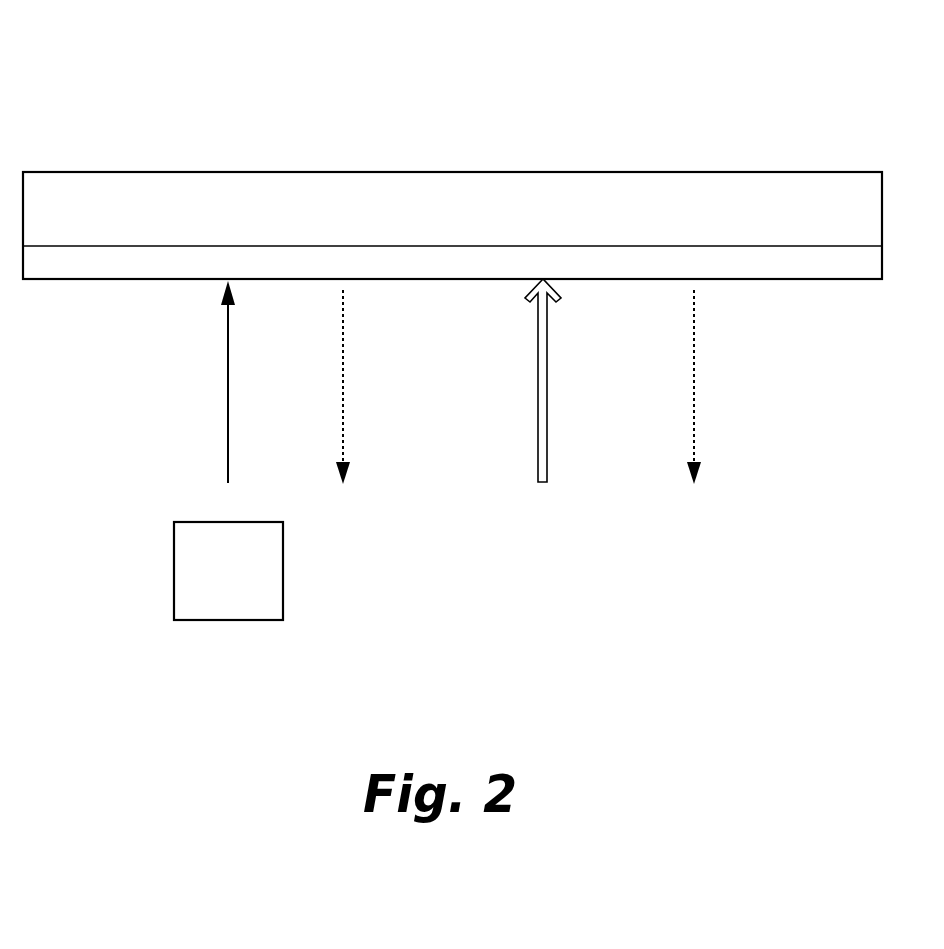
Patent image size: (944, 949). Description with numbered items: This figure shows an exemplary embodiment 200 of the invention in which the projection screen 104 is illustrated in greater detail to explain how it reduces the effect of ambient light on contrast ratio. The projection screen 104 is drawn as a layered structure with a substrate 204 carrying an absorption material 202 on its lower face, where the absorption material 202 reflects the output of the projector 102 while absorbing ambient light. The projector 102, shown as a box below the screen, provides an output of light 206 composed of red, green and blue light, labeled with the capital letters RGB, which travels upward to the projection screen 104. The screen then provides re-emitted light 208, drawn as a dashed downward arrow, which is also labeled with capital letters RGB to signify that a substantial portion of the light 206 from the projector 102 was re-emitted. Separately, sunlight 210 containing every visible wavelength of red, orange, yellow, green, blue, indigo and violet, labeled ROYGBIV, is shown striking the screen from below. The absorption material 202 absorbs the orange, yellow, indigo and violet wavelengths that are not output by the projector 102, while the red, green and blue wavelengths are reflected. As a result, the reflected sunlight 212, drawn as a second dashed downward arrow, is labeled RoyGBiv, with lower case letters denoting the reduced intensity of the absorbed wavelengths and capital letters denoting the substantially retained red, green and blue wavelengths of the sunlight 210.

The exemplary embodiment 200 is at (228, 49).
The projection screen 104 is at (229, 172).
The substrate 204 is at (452, 209).
The absorption material 202 is at (451, 261).
The light 206 is at (228, 448).
The re-emitted light 208 is at (343, 448).
The sunlight 210 is at (538, 352).
The reflected sunlight 212 is at (694, 350).
The projector 102 is at (228, 571).